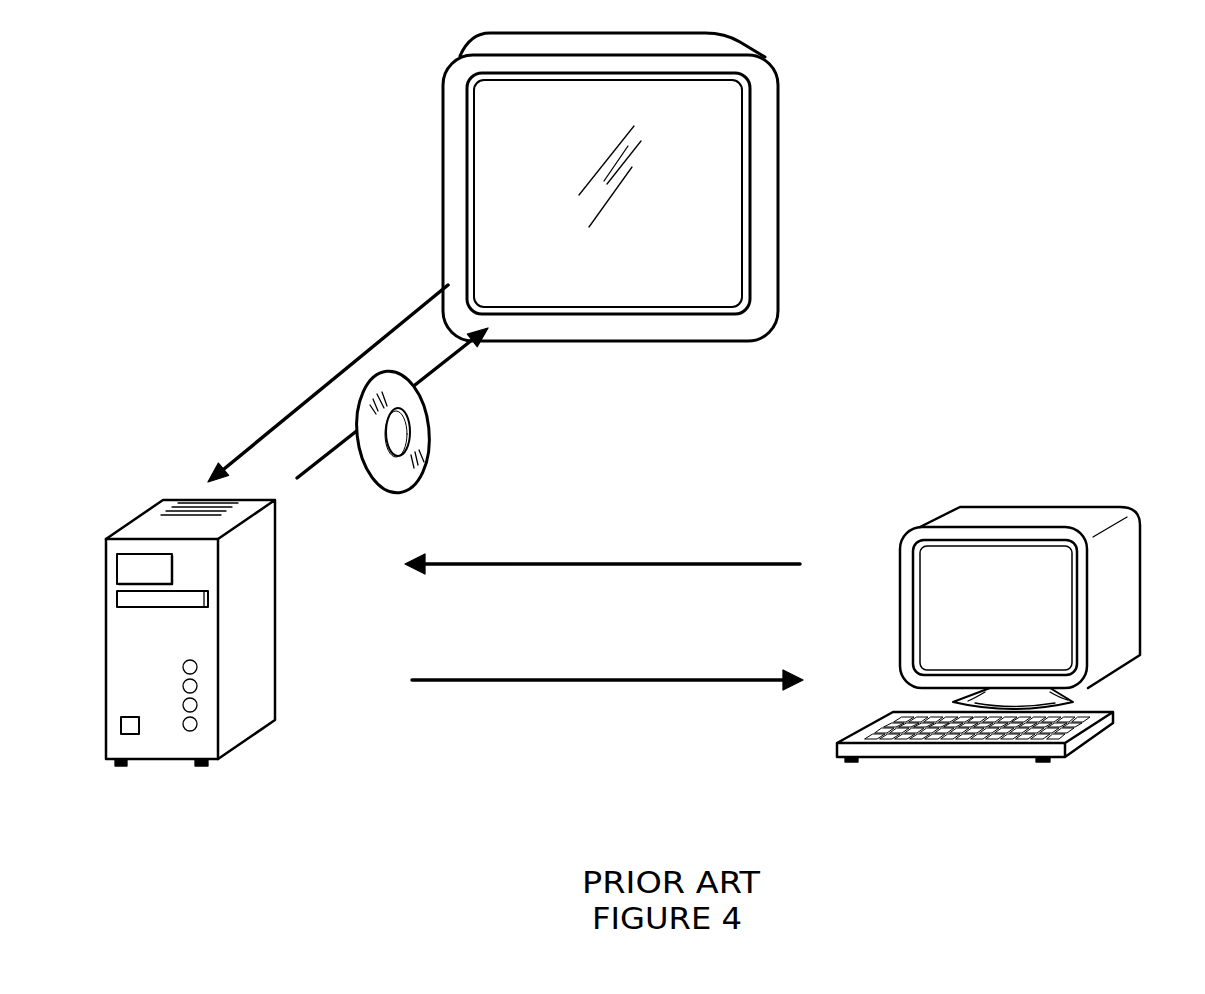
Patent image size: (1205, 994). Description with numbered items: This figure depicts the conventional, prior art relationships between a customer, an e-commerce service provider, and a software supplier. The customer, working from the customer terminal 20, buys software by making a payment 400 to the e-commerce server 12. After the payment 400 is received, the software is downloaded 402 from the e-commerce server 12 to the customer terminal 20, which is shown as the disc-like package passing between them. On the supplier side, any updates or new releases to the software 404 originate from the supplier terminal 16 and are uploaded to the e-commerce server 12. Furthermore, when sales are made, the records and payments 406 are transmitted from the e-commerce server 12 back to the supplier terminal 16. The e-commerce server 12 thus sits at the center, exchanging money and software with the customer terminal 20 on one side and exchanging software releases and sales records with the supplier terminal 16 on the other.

The e-commerce server 12 is at (242, 708).
The supplier terminal 16 is at (982, 513).
The customer terminal 20 is at (699, 267).
The payment 400 is at (259, 312).
The software download 402 is at (408, 397).
The software updates or new releases 404 is at (567, 562).
The records and payments transmission 406 is at (567, 678).